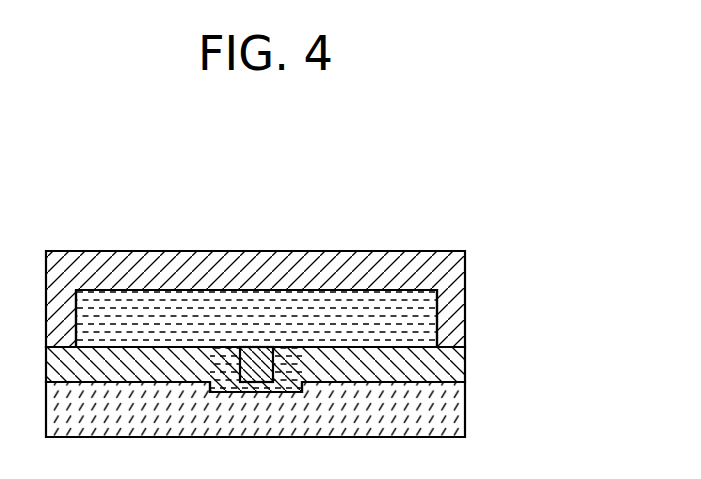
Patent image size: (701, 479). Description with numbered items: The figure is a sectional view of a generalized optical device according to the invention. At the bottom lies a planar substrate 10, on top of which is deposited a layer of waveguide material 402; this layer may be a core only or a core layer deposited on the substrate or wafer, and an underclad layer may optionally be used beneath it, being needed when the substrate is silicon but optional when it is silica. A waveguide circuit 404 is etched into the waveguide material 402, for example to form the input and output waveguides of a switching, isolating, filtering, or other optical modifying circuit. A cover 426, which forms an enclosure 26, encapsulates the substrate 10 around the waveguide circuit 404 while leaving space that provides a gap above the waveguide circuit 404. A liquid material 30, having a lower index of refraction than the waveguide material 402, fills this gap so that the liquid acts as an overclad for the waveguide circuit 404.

The cover 426 is at (123, 266).
The waveguide circuit 404 is at (255, 355).
The enclosure 26 is at (348, 287).
The liquid material 30 is at (417, 300).
The waveguide material 402 is at (452, 363).
The planar substrate 10 is at (447, 410).